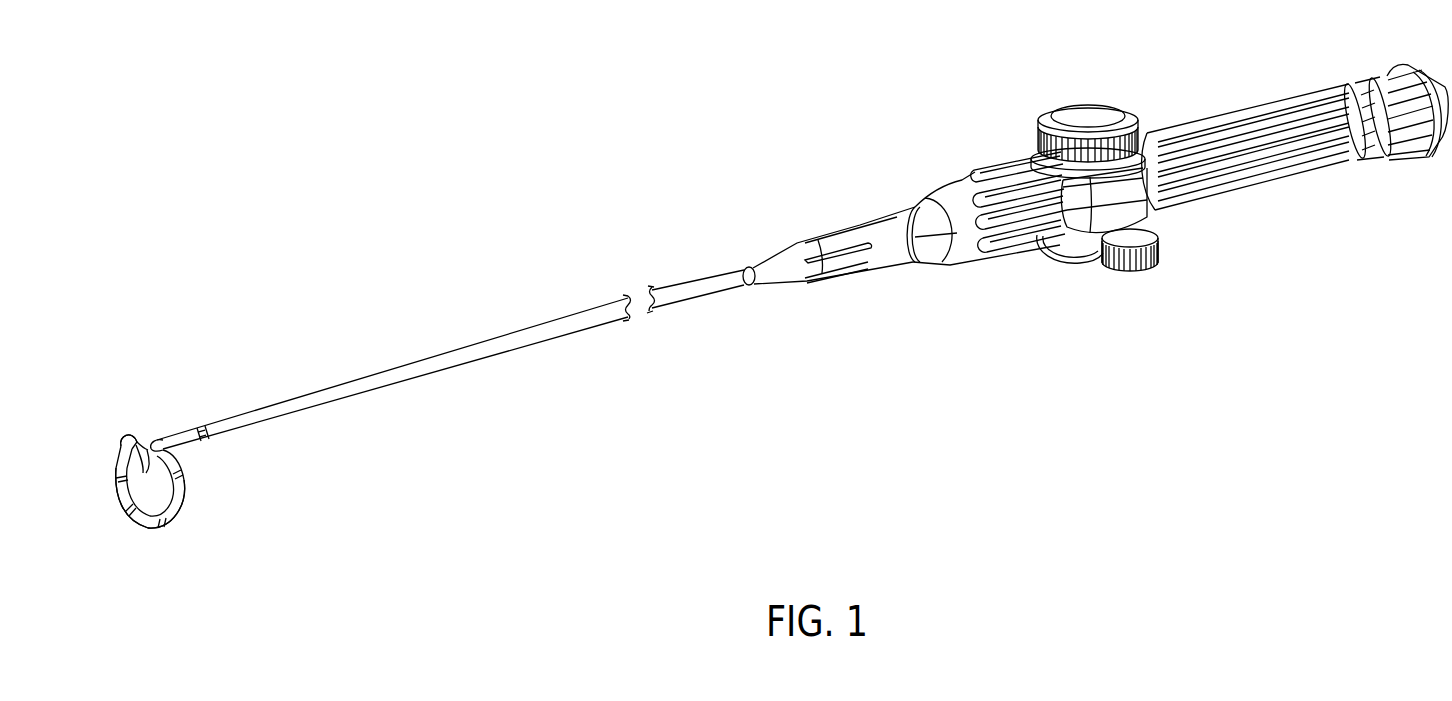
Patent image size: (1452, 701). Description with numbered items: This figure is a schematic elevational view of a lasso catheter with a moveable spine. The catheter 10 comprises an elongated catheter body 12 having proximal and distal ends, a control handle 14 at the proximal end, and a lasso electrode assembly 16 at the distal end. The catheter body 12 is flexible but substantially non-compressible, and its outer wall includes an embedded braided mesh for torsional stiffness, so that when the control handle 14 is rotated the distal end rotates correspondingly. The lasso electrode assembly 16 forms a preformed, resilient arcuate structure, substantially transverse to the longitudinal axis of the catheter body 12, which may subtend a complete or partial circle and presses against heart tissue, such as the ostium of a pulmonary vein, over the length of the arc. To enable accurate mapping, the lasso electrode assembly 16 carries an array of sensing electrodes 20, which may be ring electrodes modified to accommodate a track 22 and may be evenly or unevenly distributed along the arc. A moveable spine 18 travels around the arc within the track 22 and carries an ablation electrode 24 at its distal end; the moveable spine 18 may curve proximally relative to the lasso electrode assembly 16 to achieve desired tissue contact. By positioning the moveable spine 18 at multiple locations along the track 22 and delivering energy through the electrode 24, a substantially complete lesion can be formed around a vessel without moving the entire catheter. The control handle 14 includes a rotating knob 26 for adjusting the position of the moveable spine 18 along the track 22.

The catheter 10 is at (627, 82).
The catheter body 12 is at (543, 323).
The control handle 14 is at (1233, 112).
The lasso electrode assembly 16 is at (182, 483).
The moveable spine 18 is at (151, 473).
The sensing electrodes 20 is at (185, 500).
The track 22 is at (128, 511).
The ablation electrode 24 is at (140, 446).
The rotating knob 26 is at (1078, 115).